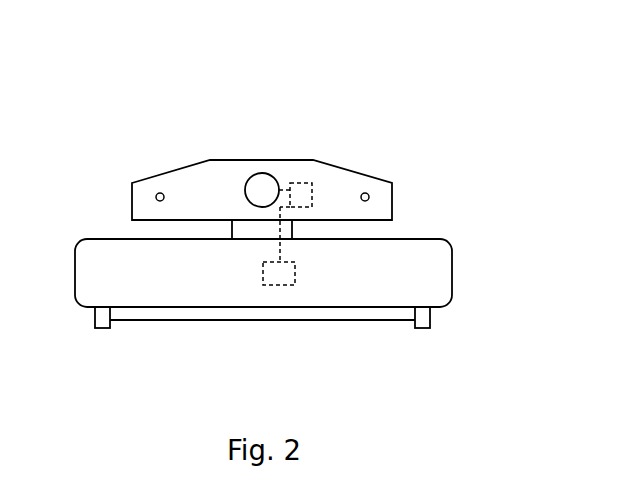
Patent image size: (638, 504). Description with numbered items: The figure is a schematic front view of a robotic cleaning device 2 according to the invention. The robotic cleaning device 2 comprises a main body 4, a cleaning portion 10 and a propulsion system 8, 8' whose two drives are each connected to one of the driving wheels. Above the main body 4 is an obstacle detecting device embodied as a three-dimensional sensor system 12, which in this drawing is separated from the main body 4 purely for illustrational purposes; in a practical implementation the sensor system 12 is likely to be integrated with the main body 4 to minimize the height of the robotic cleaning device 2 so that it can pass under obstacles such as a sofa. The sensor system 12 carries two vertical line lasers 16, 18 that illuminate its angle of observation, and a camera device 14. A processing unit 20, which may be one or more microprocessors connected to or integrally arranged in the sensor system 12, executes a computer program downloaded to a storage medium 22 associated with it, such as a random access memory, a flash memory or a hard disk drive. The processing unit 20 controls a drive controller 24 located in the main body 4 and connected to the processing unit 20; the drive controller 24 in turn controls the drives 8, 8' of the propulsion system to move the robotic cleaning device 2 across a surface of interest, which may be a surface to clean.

The robotic cleaning device 2 is at (400, 92).
The main body 4 is at (454, 242).
The propulsion system drive 8 is at (454, 336).
The propulsion system drive 8' is at (80, 340).
The cleaning portion 10 is at (408, 312).
The 3D sensor system 12 is at (204, 140).
The camera device 14 is at (260, 173).
The line laser 16 is at (157, 194).
The line laser 18 is at (367, 194).
The processing unit 20 is at (301, 183).
The storage medium 22 is at (299, 200).
The drive controller 24 is at (296, 286).